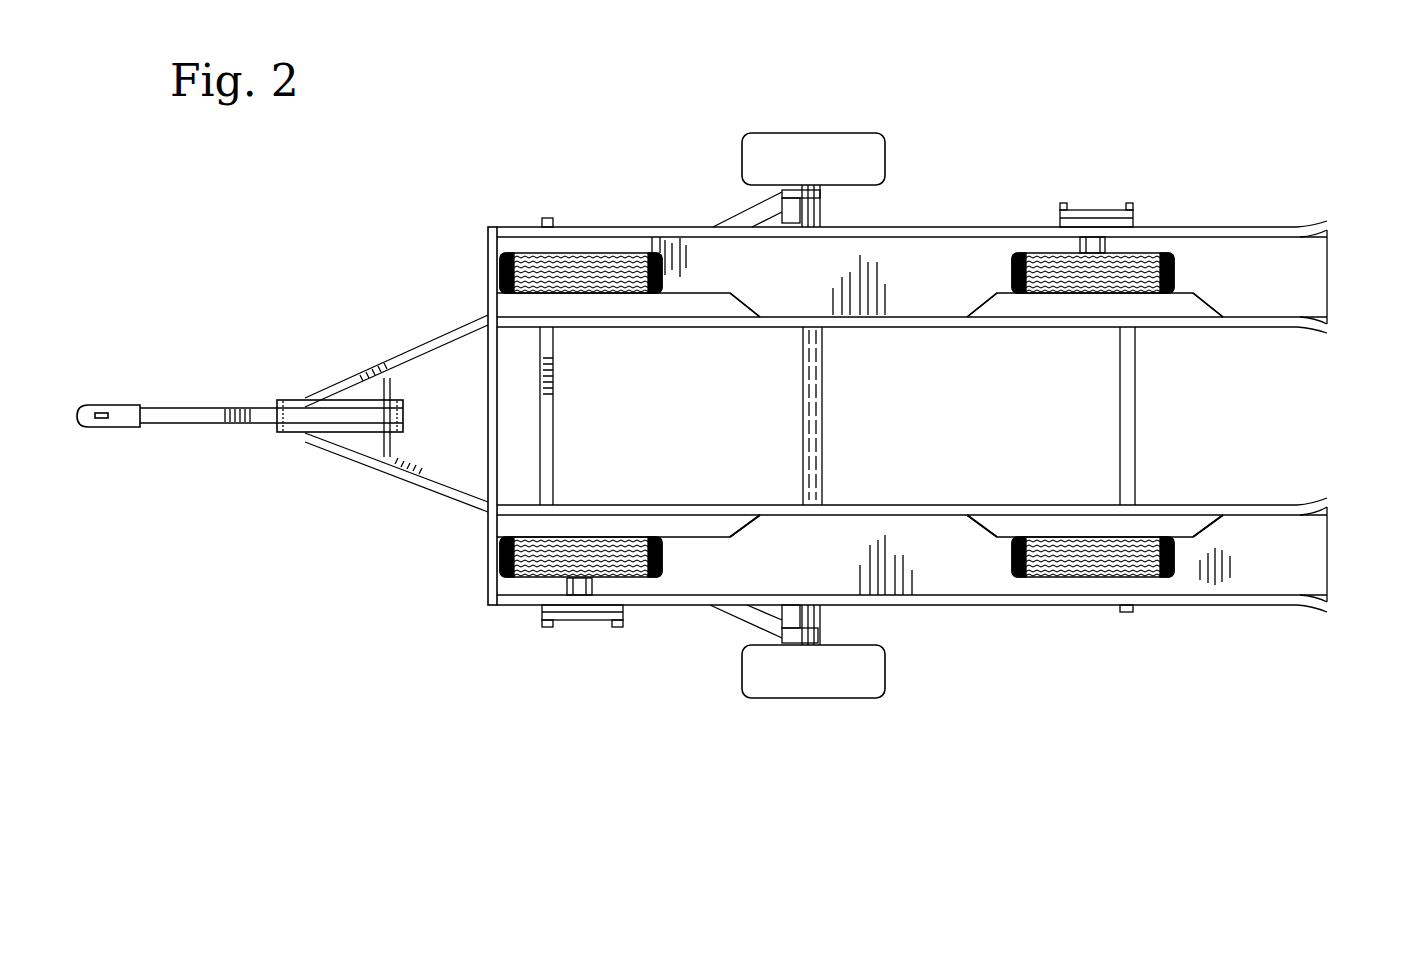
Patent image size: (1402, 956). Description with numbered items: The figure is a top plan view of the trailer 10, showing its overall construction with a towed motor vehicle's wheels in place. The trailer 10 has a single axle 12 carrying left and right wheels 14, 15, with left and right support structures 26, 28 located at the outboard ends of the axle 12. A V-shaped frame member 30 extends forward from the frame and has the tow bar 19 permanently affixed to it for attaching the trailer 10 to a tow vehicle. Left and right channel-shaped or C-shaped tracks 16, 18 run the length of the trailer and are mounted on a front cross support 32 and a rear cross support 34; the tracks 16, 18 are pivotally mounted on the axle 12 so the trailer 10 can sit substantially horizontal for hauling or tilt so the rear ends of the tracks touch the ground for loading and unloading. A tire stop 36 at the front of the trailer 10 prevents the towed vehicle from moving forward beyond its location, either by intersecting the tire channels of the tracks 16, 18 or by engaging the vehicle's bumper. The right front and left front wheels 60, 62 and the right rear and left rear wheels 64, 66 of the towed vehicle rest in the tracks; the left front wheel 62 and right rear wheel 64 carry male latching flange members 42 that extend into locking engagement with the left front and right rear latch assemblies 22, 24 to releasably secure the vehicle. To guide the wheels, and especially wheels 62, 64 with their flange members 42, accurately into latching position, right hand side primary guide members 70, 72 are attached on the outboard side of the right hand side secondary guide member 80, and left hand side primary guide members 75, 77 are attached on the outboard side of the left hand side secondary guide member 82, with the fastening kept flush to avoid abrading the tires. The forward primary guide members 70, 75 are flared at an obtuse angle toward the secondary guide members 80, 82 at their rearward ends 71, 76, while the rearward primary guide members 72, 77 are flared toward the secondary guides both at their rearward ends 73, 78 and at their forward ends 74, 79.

The trailer 10 is at (432, 122).
The axle 12 is at (815, 403).
The left wheel 14 is at (887, 672).
The right wheel 15 is at (742, 150).
The left channel-shaped track 16 is at (1064, 610).
The right channel-shaped track 18 is at (1275, 223).
The tow bar 19 is at (190, 410).
The left front latch assembly 22 is at (582, 631).
The right rear latch assembly 24 is at (1090, 201).
The left support structure 26 is at (782, 607).
The right support structure 28 is at (812, 218).
The V-shaped frame member 30 is at (418, 369).
The front cross support 32 is at (552, 410).
The rear cross support 34 is at (1130, 405).
The tire stop 36 is at (498, 413).
The male latching flange member 42 is at (1110, 237).
The right front wheel 60 is at (582, 253).
The left front wheel 62 is at (498, 562).
The right rear wheel 64 is at (1170, 272).
The left rear wheel 66 is at (1147, 578).
The right hand side forward primary guide member 70 is at (510, 305).
The rearward end of primary guide member 71 is at (757, 303).
The right hand side rearward primary guide member 72 is at (1200, 310).
The rearward end of primary guide member 73 is at (1210, 303).
The forward end of primary guide member 74 is at (980, 303).
The left hand side forward primary guide member 75 is at (510, 523).
The rearward end of primary guide member 76 is at (745, 535).
The left hand side rearward primary guide member 77 is at (1185, 525).
The rearward end of primary guide member 78 is at (1210, 528).
The forward end of primary guide member 79 is at (975, 538).
The right hand side secondary guide member 80 is at (905, 320).
The left hand side secondary guide member 82 is at (920, 505).